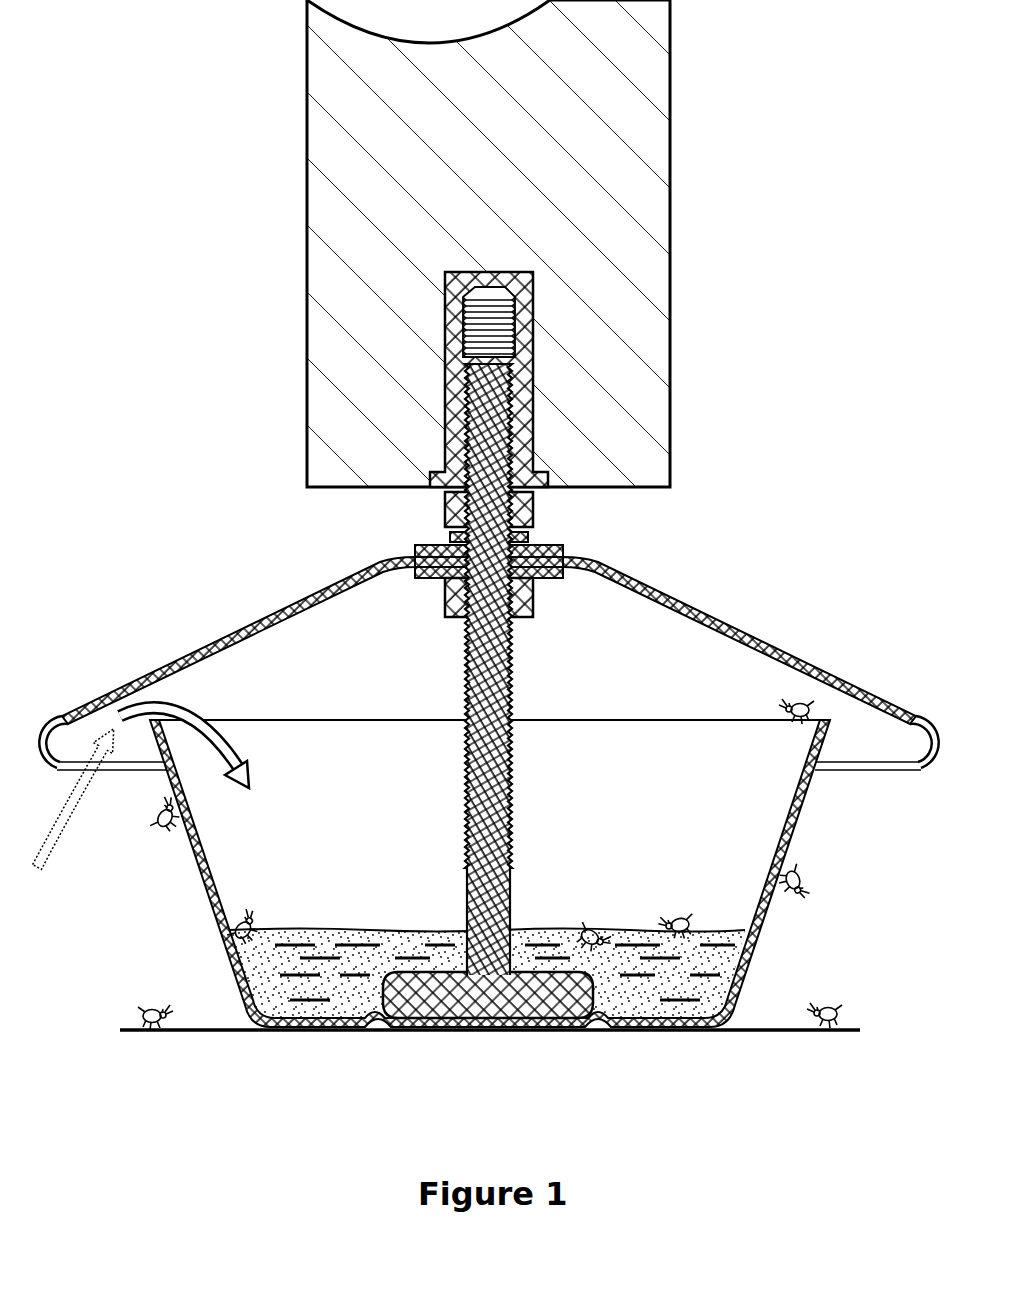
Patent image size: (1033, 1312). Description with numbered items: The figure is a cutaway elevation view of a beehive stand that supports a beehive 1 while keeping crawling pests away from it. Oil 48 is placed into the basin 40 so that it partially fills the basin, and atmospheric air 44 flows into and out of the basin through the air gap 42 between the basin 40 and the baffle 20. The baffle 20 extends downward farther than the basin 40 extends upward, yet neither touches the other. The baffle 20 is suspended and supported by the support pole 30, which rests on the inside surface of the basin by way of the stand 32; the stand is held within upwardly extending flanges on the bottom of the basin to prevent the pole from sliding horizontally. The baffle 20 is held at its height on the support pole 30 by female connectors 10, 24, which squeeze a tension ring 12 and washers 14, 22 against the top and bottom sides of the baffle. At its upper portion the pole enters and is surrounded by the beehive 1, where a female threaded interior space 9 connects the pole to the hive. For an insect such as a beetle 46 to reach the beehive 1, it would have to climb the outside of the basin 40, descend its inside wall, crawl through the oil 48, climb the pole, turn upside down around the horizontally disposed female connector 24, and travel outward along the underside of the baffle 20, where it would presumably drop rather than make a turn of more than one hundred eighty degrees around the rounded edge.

The beehive 1 is at (618, 113).
The support pole 30 is at (500, 393).
The threaded interior space 9 is at (525, 440).
The female connector 10 is at (525, 510).
The tension ring 12 is at (525, 535).
The washer 14 is at (525, 552).
The baffle 20 is at (383, 562).
The washer 22 is at (372, 568).
The female connector 24 is at (443, 598).
The stand 32 is at (473, 1000).
The basin 40 is at (783, 855).
The air gap 42 is at (133, 765).
The atmospheric air 44 is at (300, 815).
The beetle 46 is at (790, 897).
The oil 48 is at (287, 987).